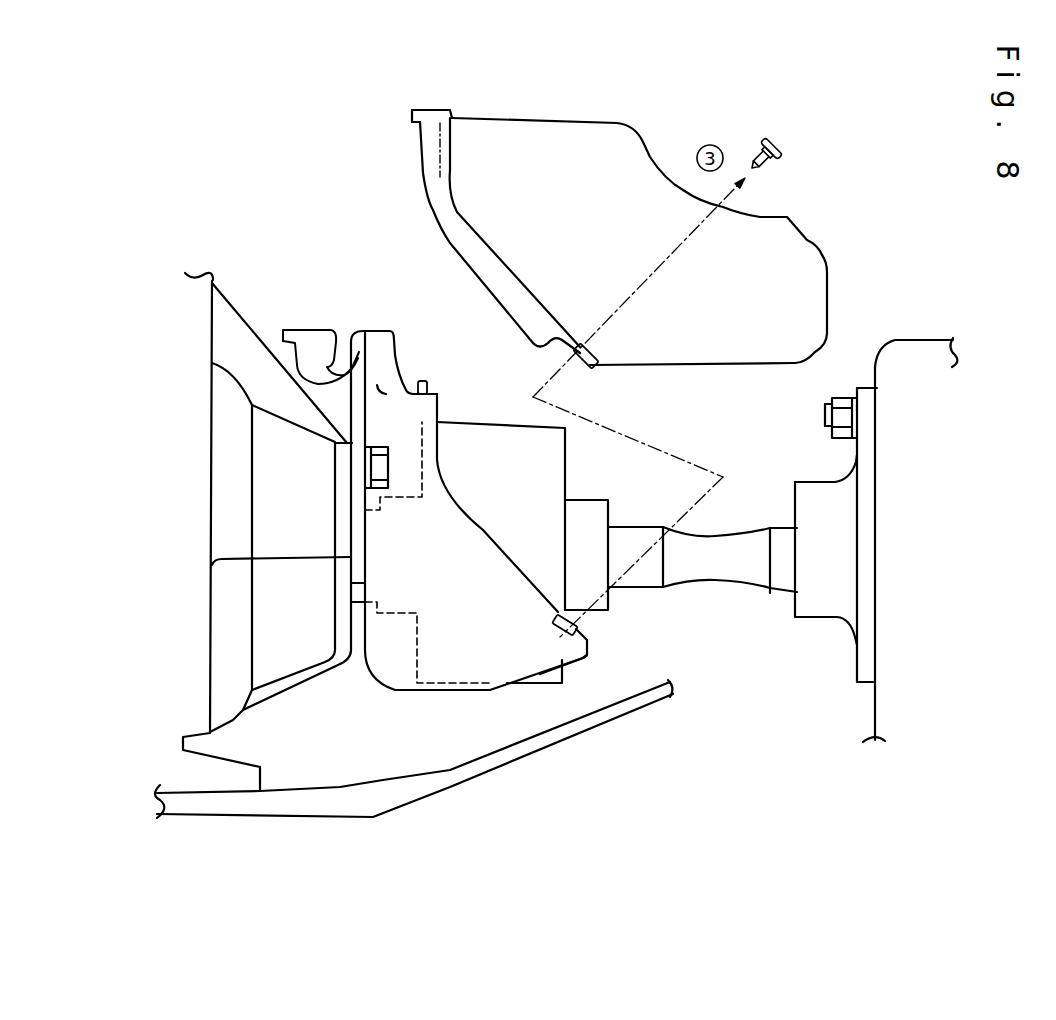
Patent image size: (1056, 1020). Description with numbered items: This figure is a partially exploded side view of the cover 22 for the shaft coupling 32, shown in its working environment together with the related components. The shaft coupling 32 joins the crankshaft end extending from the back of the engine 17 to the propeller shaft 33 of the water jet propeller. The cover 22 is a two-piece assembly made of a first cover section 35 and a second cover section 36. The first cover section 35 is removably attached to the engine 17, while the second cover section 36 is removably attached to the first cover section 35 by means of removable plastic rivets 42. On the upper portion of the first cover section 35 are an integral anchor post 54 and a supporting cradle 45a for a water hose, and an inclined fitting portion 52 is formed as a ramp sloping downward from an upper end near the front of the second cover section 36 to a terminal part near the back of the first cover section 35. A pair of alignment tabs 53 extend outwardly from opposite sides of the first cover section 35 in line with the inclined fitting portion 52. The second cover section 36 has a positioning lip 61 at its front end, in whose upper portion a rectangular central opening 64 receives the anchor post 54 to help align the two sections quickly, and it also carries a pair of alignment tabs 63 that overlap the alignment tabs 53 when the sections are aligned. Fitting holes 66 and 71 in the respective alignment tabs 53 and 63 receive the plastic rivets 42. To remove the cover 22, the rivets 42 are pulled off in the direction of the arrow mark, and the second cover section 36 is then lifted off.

The engine 17 is at (115, 372).
The supporting cradle 45a is at (315, 337).
The first cover section 35 is at (380, 328).
The cover 22 is at (367, 250).
The rectangular central opening 64 is at (430, 110).
The second cover section 36 is at (553, 117).
The positioning lip 61 is at (441, 226).
The fitting hole 71 is at (600, 344).
The alignment tab 63 is at (603, 347).
The anchor post 54 is at (421, 380).
The shaft coupling 32 is at (483, 415).
The inclined fitting portion 52 is at (483, 530).
The fitting hole 66 is at (578, 626).
The alignment tab 53 is at (583, 655).
The propeller shaft 33 is at (783, 528).
The removable plastic rivet 42 is at (787, 140).